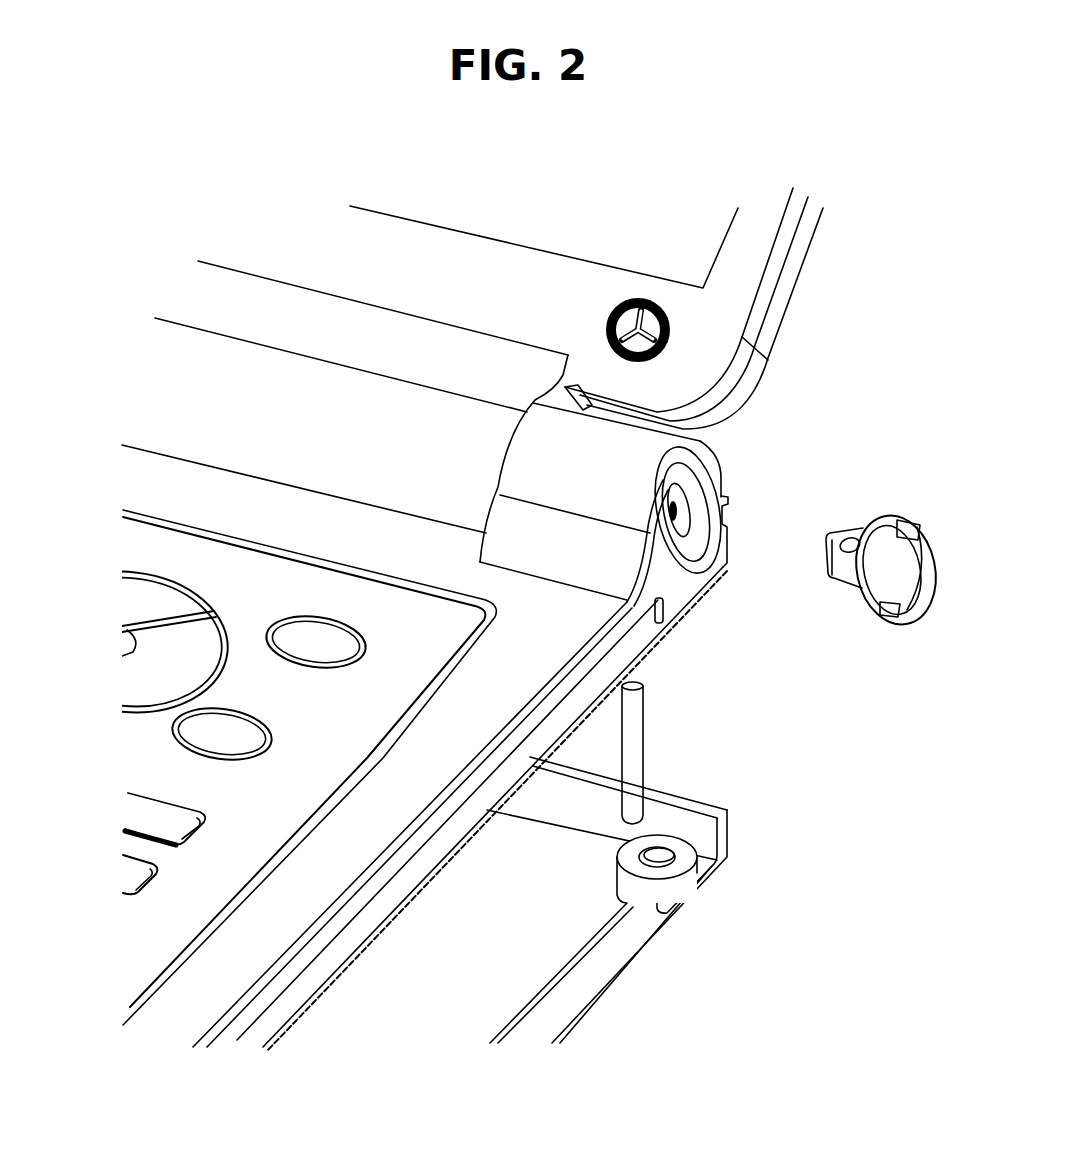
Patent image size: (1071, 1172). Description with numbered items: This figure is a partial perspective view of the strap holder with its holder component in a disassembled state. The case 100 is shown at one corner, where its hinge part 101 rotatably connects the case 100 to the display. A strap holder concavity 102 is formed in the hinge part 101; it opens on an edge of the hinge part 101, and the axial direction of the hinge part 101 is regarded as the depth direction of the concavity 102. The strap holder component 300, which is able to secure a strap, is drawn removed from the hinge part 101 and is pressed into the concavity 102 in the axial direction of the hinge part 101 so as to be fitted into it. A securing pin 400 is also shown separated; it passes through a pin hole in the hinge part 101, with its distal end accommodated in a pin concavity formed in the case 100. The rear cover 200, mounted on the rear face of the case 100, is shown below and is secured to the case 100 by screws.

The case 100 is at (683, 613).
The hinge part 101 is at (717, 460).
The strap holder concavity 102 is at (730, 503).
The rear cover 200 is at (700, 903).
The strap holder component 300 is at (917, 627).
The securing pin 400 is at (643, 758).